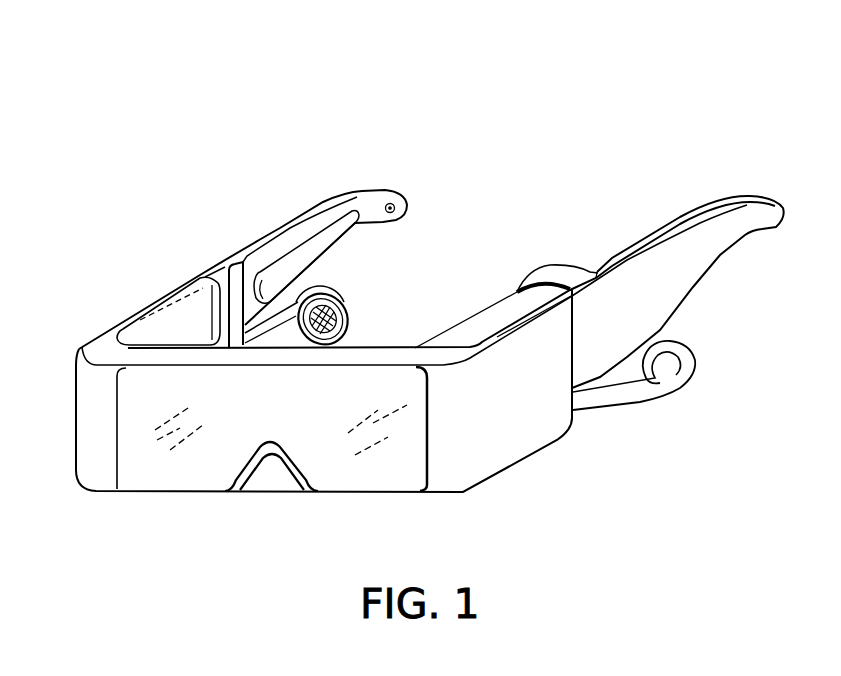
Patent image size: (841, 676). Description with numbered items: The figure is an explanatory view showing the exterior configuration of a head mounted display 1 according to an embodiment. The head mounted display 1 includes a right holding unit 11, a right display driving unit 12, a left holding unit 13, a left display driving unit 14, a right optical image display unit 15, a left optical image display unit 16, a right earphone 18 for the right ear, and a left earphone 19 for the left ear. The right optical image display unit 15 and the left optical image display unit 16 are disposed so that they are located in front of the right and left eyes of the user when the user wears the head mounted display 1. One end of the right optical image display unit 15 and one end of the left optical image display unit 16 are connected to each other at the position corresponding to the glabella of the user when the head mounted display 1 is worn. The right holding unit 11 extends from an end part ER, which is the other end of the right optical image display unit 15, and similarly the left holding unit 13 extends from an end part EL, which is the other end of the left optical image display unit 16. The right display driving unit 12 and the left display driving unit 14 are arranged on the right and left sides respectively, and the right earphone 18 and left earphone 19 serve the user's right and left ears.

The head mounted display 1 is at (648, 68).
The right holding unit 11 is at (318, 188).
The right display driving unit 12 is at (162, 326).
The left holding unit 13 is at (710, 183).
The left display driving unit 14 is at (488, 320).
The right optical image display unit 15 is at (171, 473).
The left optical image display unit 16 is at (368, 474).
The right earphone 18 is at (336, 291).
The left earphone 19 is at (697, 360).
The end part ER is at (93, 470).
The end part EL is at (443, 472).